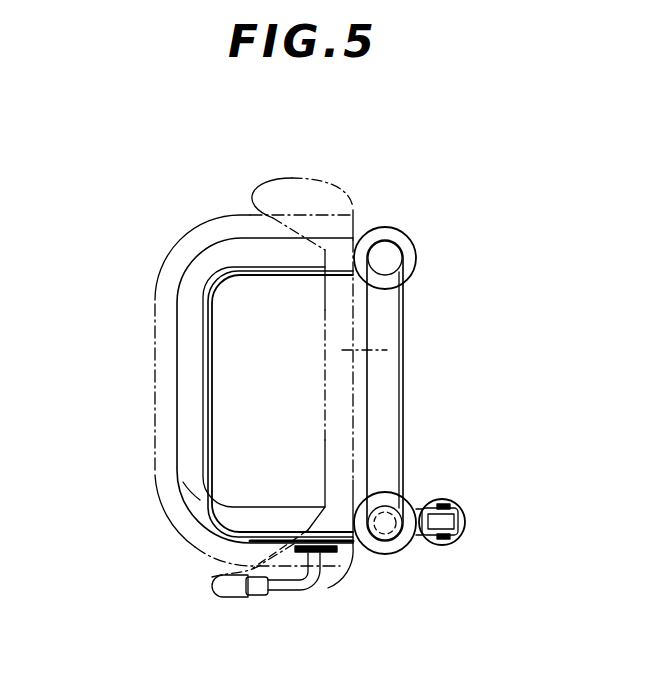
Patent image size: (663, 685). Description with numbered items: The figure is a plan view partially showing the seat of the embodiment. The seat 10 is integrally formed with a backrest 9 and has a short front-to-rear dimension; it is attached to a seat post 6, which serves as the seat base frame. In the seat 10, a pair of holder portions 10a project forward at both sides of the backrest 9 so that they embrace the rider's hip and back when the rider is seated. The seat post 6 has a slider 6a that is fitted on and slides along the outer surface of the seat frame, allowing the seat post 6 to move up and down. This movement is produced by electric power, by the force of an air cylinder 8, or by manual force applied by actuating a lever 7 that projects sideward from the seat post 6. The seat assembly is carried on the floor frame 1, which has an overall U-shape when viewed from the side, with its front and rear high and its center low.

The floor frame 1 is at (401, 408).
The seat post 6 is at (188, 323).
The slider 6a is at (408, 237).
The lever 7 is at (212, 586).
The air cylinder 8 is at (466, 523).
The backrest 9 is at (395, 343).
The seat 10 is at (168, 472).
The holder portions 10a is at (272, 180).